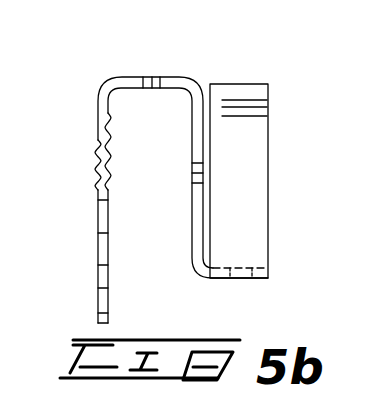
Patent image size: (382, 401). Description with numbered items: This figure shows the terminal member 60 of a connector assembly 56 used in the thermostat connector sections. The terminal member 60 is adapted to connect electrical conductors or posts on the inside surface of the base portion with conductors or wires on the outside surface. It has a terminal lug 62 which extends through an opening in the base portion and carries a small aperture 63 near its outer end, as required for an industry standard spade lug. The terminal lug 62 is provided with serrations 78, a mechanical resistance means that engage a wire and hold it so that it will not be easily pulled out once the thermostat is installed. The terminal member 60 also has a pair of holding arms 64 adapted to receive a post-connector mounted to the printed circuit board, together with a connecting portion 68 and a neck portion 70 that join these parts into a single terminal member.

The connector assembly 56 is at (268, 67).
The terminal member 60 is at (195, 285).
The terminal lug 62 is at (98, 250).
The small aperture 63 is at (109, 284).
The holding arms 64 is at (263, 203).
The connecting portion 68 is at (191, 163).
The neck portion 70 is at (184, 78).
The serrations 78 is at (113, 160).